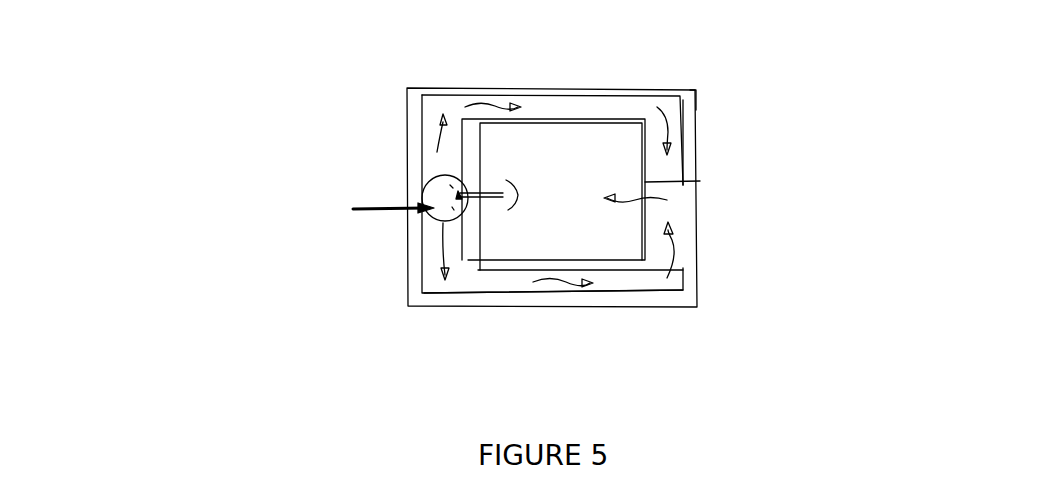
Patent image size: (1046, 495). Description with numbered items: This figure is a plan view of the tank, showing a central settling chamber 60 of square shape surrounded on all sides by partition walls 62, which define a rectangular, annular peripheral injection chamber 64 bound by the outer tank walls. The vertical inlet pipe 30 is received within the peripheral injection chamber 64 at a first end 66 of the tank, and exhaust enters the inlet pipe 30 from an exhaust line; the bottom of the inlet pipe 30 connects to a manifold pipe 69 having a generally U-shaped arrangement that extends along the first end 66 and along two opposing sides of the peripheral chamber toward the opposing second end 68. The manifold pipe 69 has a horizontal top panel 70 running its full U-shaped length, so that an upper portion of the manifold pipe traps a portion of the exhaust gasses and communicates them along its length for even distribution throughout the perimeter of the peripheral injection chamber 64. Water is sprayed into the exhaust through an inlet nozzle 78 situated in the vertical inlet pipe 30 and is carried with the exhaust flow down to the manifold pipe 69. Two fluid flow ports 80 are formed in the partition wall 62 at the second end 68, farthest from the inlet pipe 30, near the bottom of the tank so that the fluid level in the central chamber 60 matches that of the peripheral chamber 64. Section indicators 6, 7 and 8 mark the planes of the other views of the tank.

The vertical inlet pipe 30 is at (423, 186).
The central settling chamber 60 is at (617, 176).
The partition walls 62 is at (612, 127).
The peripheral injection chamber 64 is at (690, 155).
The first end 66 is at (404, 82).
The second end 68 is at (710, 93).
The manifold pipe 69 is at (538, 102).
The top panel 70 is at (643, 285).
The inlet nozzle 78 is at (452, 203).
The fluid flow ports 80 is at (645, 182).
The section line 6 is at (546, 43).
The section line 7 is at (116, 190).
The section line 8 is at (113, 312).